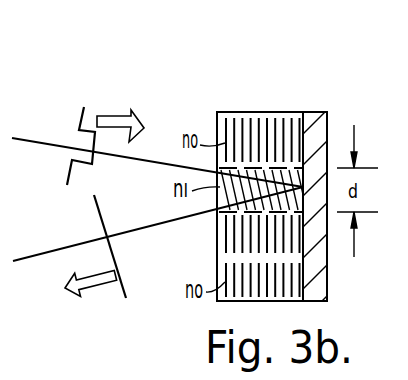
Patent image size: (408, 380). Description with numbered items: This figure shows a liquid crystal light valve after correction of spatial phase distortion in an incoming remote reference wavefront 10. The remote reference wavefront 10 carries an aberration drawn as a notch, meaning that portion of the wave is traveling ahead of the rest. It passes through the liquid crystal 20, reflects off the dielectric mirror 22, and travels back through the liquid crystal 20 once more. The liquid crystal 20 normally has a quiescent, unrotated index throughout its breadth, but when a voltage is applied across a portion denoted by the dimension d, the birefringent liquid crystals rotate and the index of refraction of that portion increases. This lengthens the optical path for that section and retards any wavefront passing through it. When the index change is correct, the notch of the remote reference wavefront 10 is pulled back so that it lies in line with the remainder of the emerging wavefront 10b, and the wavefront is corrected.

The remote reference wavefront 10 is at (157, 132).
The corrected wavefront 10b is at (158, 243).
The liquid crystal 20 is at (248, 112).
The dielectric mirror 22 is at (310, 112).